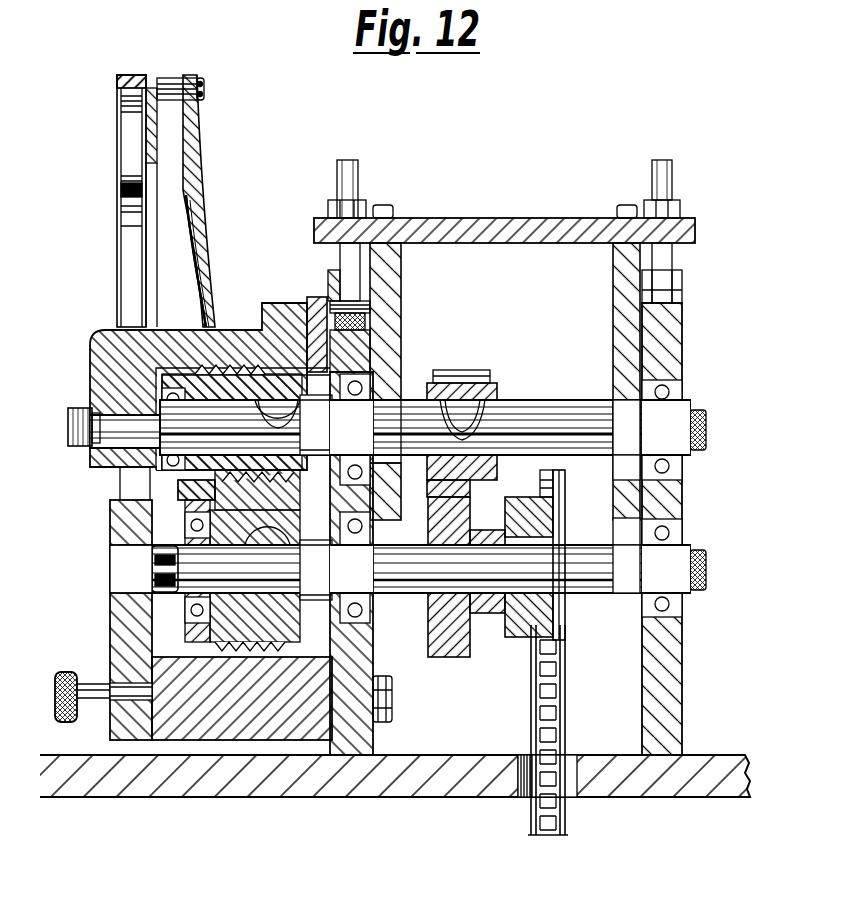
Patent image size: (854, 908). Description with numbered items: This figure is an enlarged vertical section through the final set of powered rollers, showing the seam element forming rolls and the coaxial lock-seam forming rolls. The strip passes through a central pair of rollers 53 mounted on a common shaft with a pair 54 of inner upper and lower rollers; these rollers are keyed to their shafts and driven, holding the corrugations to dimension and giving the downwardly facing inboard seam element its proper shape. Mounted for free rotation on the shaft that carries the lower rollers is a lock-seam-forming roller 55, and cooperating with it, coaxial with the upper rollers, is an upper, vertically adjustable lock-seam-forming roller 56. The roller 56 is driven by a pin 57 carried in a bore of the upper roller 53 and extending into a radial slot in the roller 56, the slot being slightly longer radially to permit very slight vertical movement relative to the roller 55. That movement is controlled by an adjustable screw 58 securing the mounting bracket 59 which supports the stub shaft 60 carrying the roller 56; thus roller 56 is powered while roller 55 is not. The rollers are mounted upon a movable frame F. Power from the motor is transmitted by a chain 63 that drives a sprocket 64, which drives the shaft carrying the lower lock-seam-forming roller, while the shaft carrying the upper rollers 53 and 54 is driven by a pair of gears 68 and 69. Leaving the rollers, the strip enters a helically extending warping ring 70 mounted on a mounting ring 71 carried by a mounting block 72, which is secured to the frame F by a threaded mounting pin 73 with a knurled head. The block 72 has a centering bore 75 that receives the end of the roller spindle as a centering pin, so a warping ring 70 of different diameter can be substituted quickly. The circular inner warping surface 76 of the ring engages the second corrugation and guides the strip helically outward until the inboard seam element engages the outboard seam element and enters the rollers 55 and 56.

The central pair of rollers 53 is at (218, 388).
The pair of inner, upper and lower rollers 54 is at (305, 498).
The lock-seam-forming roller 55 is at (162, 630).
The upper lock-seam-forming roller 56 is at (163, 385).
The pin 57 is at (203, 385).
The adjustable screw 58 is at (300, 335).
The mounting bracket 59 is at (112, 328).
The stub shaft 60 is at (68, 421).
The chain 63 is at (566, 692).
The sprocket 64 is at (563, 630).
The gear 68 is at (458, 650).
The gear 69 is at (455, 378).
The warping ring 70 is at (200, 126).
The mounting ring 71 is at (117, 79).
The mounting block 72 is at (112, 621).
The threaded mounting pin 73 is at (56, 688).
The centering bore 75 is at (122, 566).
The circular inner warping surface 76 is at (200, 196).
The frame F is at (384, 800).